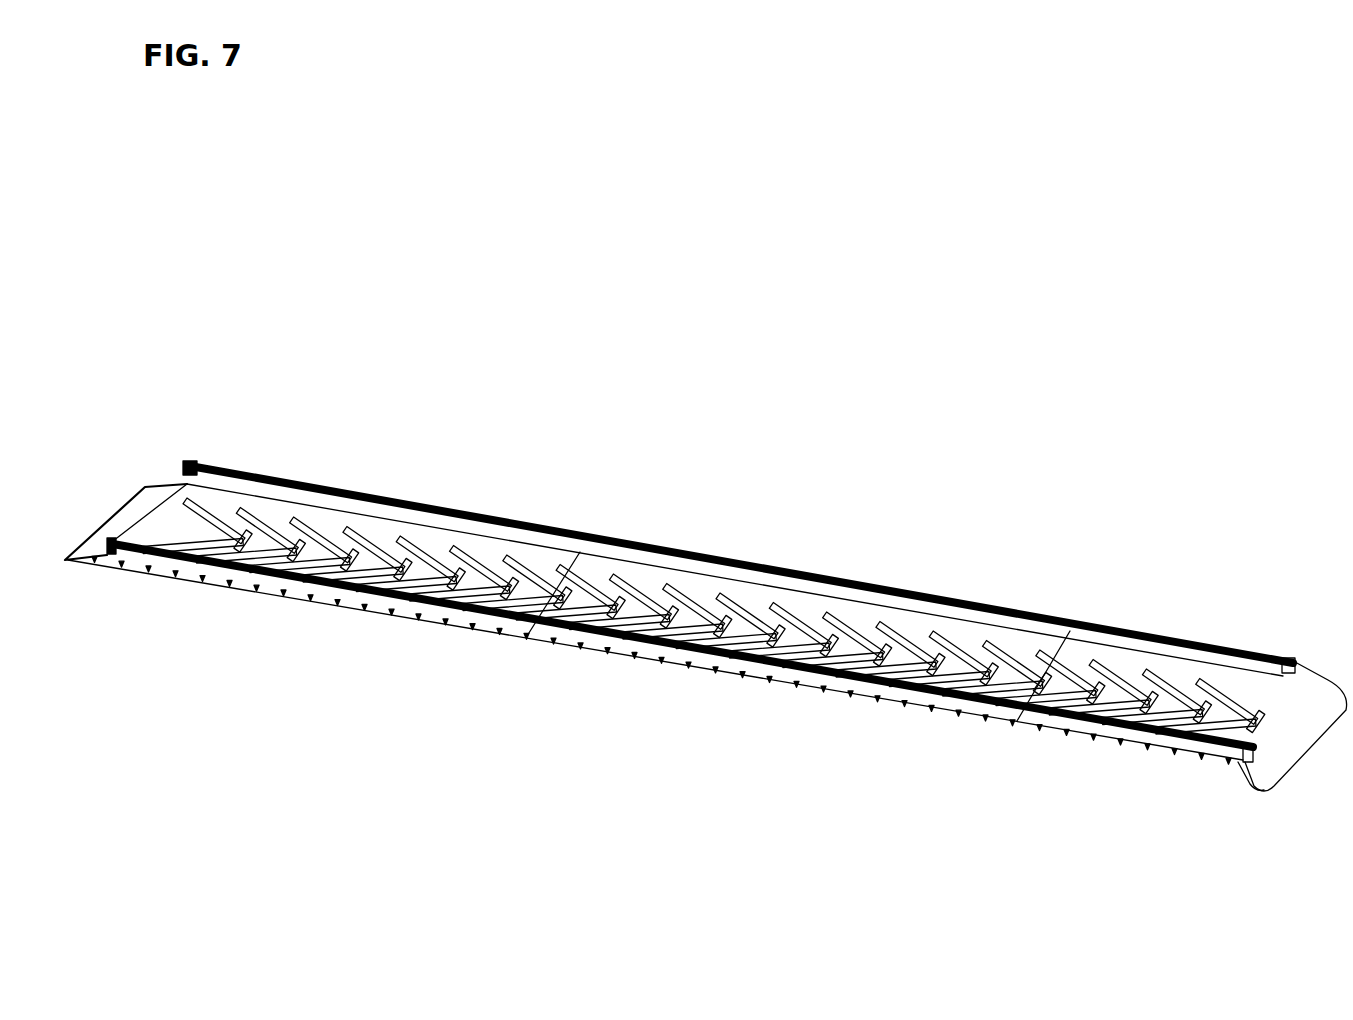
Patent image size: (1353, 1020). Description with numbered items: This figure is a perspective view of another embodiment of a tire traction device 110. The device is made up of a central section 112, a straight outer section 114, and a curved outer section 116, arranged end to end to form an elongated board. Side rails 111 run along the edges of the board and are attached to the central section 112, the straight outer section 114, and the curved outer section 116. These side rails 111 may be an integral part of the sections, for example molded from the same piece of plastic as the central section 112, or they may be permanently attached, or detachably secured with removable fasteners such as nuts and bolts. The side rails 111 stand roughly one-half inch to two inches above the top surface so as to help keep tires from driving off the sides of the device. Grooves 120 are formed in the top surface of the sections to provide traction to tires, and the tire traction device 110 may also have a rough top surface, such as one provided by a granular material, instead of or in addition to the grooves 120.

The tire traction device 110 is at (809, 387).
The side rails 111 is at (1245, 617).
The central section 112 is at (915, 628).
The straight outer section 114 is at (368, 524).
The curved outer section 116 is at (1130, 662).
The grooves 120 is at (528, 590).